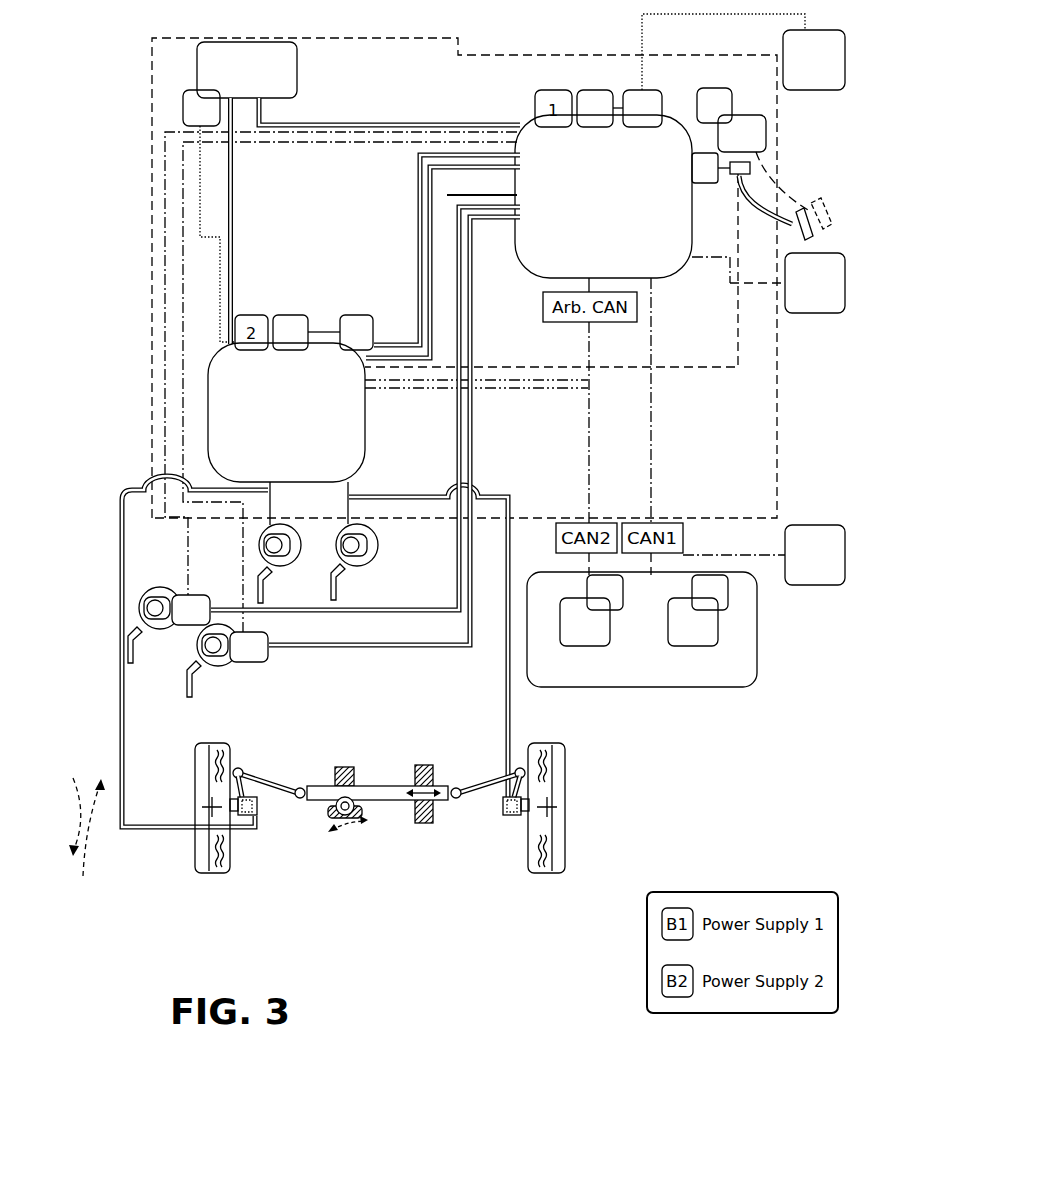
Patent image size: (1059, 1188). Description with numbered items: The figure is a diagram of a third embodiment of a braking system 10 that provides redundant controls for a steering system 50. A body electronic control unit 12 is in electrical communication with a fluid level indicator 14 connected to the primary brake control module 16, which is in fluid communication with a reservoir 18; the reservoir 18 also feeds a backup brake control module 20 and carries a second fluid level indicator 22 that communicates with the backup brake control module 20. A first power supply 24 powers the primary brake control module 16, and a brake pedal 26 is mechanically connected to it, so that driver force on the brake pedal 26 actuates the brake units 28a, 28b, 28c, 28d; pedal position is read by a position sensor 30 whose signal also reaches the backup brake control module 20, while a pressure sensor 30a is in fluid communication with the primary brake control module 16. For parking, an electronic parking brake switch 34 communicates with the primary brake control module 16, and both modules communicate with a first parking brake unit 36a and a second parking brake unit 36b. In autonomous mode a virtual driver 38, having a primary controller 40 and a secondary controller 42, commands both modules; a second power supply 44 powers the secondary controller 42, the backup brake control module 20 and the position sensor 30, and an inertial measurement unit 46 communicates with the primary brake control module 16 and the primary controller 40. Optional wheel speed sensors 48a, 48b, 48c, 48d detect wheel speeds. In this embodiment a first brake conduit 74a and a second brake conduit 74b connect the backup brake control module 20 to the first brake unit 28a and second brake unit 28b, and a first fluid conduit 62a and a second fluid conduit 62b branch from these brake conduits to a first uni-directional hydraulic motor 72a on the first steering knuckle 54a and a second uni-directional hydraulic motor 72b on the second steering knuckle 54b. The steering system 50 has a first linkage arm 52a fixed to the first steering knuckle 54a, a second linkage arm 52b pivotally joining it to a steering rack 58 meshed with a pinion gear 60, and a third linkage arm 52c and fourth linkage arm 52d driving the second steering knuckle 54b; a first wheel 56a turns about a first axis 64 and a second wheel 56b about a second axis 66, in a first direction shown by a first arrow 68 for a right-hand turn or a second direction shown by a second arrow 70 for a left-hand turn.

The braking system 10 is at (120, 410).
The body electronic control unit 12 is at (832, 30).
The fluid level indicator 14 is at (655, 90).
The primary brake control module 16 is at (590, 214).
The reservoir 18 is at (297, 70).
The backup brake control module 20 is at (276, 445).
The second fluid level indicator 22 is at (183, 108).
The first power supply 24 is at (597, 90).
The brake pedal 26 is at (812, 236).
The first brake unit 28a is at (378, 545).
The second brake unit 28b is at (260, 545).
The third brake unit 28c is at (175, 590).
The fourth brake unit 28d is at (236, 662).
The position sensor 30 is at (767, 131).
The pressure sensor 30a is at (357, 315).
The electronic parking brake switch 34 is at (845, 284).
The first parking brake unit 36a is at (188, 626).
The second parking brake unit 36b is at (268, 645).
The virtual driver 38 is at (727, 689).
The primary controller 40 is at (717, 625).
The secondary controller 42 is at (560, 618).
The second power supply 44 is at (713, 88).
The inertial measurement unit 46 is at (810, 525).
The wheel speed sensor 48a is at (340, 585).
The wheel speed sensor 48b is at (257, 585).
The wheel speed sensor 48c is at (128, 635).
The wheel speed sensor 48d is at (188, 680).
The steering system 50 is at (351, 884).
The first linkage arm 52a is at (522, 783).
The second linkage arm 52b is at (482, 785).
The third linkage arm 52c is at (268, 783).
The fourth linkage arm 52d is at (250, 790).
The first steering knuckle 54a is at (518, 816).
The second steering knuckle 54b is at (246, 828).
The first wheel 56a is at (547, 744).
The second wheel 56b is at (210, 872).
The steering rack 58 is at (389, 786).
The pinion gear 60 is at (352, 797).
The first fluid conduit 62a is at (494, 493).
The second fluid conduit 62b is at (121, 712).
The first axis 64 is at (556, 809).
The second axis 66 is at (210, 808).
The first arrow 68 is at (74, 806).
The second arrow 70 is at (78, 836).
The first uni-directional hydraulic motor 72a is at (504, 814).
The second uni-directional hydraulic motor 72b is at (256, 814).
The first brake conduit 74a is at (349, 480).
The second brake conduit 74b is at (271, 507).